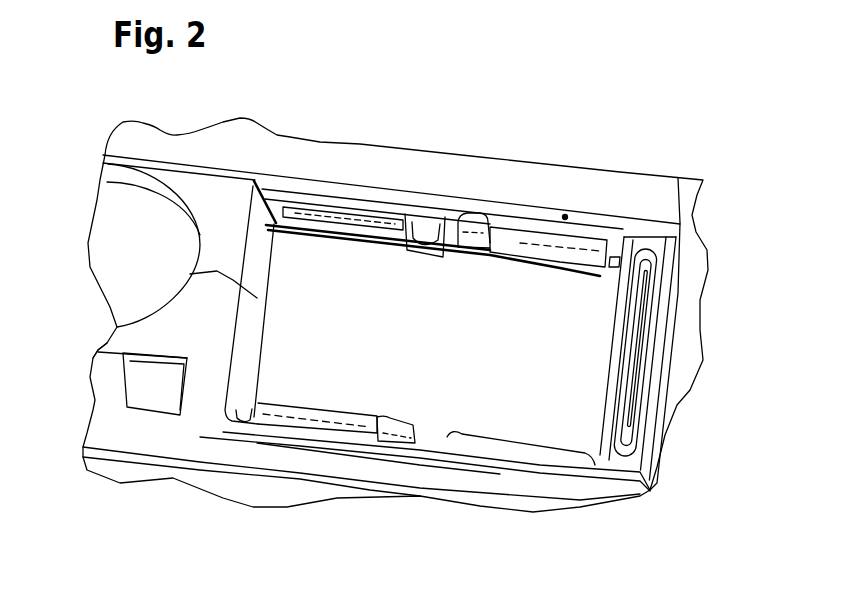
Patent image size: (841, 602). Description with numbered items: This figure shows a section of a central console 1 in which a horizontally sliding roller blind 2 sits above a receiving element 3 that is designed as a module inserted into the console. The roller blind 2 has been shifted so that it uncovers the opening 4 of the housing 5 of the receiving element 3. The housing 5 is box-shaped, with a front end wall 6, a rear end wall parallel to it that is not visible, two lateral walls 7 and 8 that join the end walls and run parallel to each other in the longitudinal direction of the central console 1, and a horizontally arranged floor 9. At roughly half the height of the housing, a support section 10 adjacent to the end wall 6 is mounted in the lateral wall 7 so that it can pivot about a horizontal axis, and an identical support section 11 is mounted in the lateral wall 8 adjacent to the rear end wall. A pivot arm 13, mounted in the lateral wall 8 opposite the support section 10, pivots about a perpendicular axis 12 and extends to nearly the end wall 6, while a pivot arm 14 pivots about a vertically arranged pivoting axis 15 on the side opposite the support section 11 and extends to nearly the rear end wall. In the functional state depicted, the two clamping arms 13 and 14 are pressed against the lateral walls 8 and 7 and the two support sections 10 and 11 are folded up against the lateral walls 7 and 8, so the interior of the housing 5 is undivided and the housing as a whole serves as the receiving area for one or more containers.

The central console 1 is at (395, 353).
The roller blind 2 is at (637, 289).
The receiving element 3 is at (592, 196).
The opening 4 is at (250, 302).
The housing 5 is at (163, 318).
The front end wall 6 is at (182, 245).
The lateral wall 7 is at (436, 390).
The lateral wall 8 is at (496, 184).
The floor 9 is at (399, 327).
The support section 10 is at (317, 390).
The support section 11 is at (548, 195).
The perpendicular axis 12 is at (453, 186).
The pivot arm 13 is at (442, 164).
The pivot arm 14 is at (521, 420).
The pivoting axis 15 is at (419, 405).